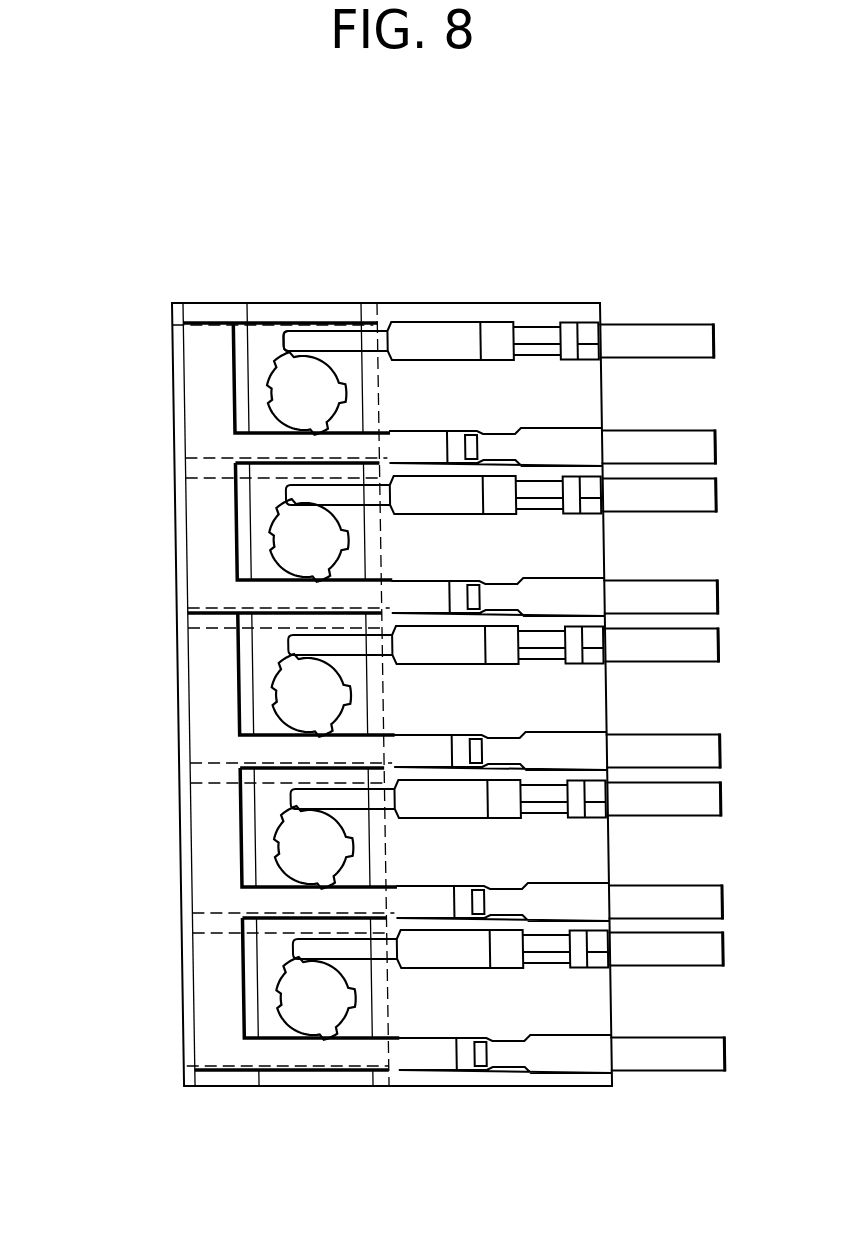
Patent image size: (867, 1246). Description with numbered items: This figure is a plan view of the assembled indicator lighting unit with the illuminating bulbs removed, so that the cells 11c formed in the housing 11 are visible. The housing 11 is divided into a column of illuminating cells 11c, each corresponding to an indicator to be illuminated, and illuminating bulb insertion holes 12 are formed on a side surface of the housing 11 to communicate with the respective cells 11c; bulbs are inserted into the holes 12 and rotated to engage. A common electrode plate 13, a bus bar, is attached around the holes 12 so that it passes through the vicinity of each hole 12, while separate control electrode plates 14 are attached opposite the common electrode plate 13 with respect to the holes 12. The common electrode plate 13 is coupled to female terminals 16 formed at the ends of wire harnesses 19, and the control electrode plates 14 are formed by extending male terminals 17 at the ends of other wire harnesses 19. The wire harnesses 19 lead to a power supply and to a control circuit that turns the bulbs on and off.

The housing 11 is at (323, 1088).
The cells 11c is at (203, 992).
The illuminating bulb insertion holes 12 is at (316, 410).
The common electrode plate 13 is at (202, 667).
The control electrode plates 14 is at (343, 338).
The female terminals 16 is at (515, 1060).
The male terminals 17 is at (458, 338).
The wire harnesses 19 is at (728, 1068).